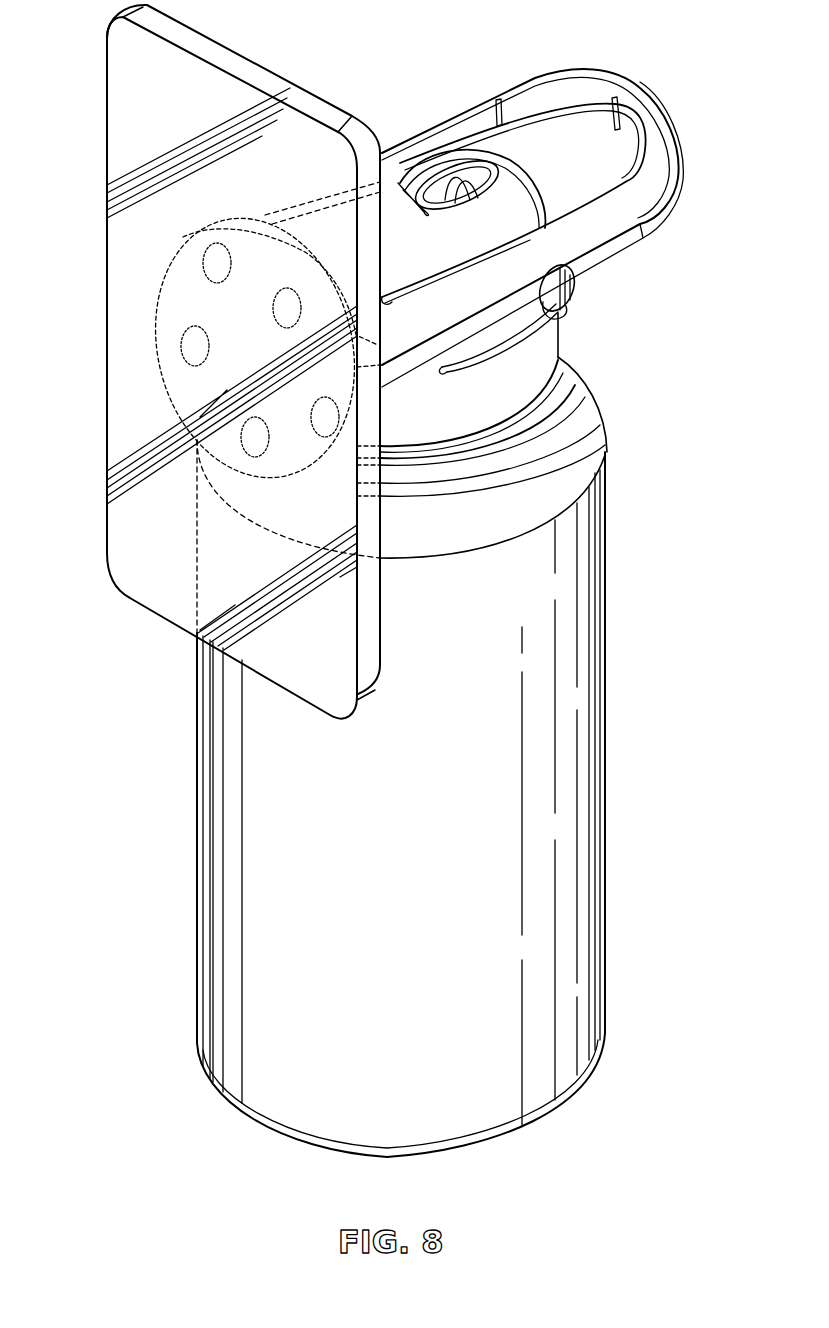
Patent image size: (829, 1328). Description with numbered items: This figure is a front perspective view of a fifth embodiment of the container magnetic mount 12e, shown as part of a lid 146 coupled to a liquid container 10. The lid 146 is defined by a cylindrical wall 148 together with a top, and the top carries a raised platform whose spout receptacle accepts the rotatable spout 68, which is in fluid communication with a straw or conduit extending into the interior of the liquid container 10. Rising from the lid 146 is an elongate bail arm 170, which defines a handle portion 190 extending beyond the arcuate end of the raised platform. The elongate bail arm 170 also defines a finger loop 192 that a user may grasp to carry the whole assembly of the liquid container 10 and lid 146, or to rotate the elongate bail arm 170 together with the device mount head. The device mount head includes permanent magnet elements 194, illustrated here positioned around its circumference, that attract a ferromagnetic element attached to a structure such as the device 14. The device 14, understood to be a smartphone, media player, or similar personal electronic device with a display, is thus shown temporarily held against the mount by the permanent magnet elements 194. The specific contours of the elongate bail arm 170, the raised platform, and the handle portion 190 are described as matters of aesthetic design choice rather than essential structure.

The liquid container 10 is at (596, 940).
The container magnetic mount 12e is at (508, 264).
The device 14 is at (142, 580).
The rotatable spout 68 is at (438, 196).
The lid 146 is at (542, 354).
The cylindrical wall 148 is at (560, 318).
The elongate bail arm 170 is at (623, 210).
The handle portion 190 is at (629, 92).
The finger loop 192 is at (548, 130).
The permanent magnet elements 194 is at (181, 344).